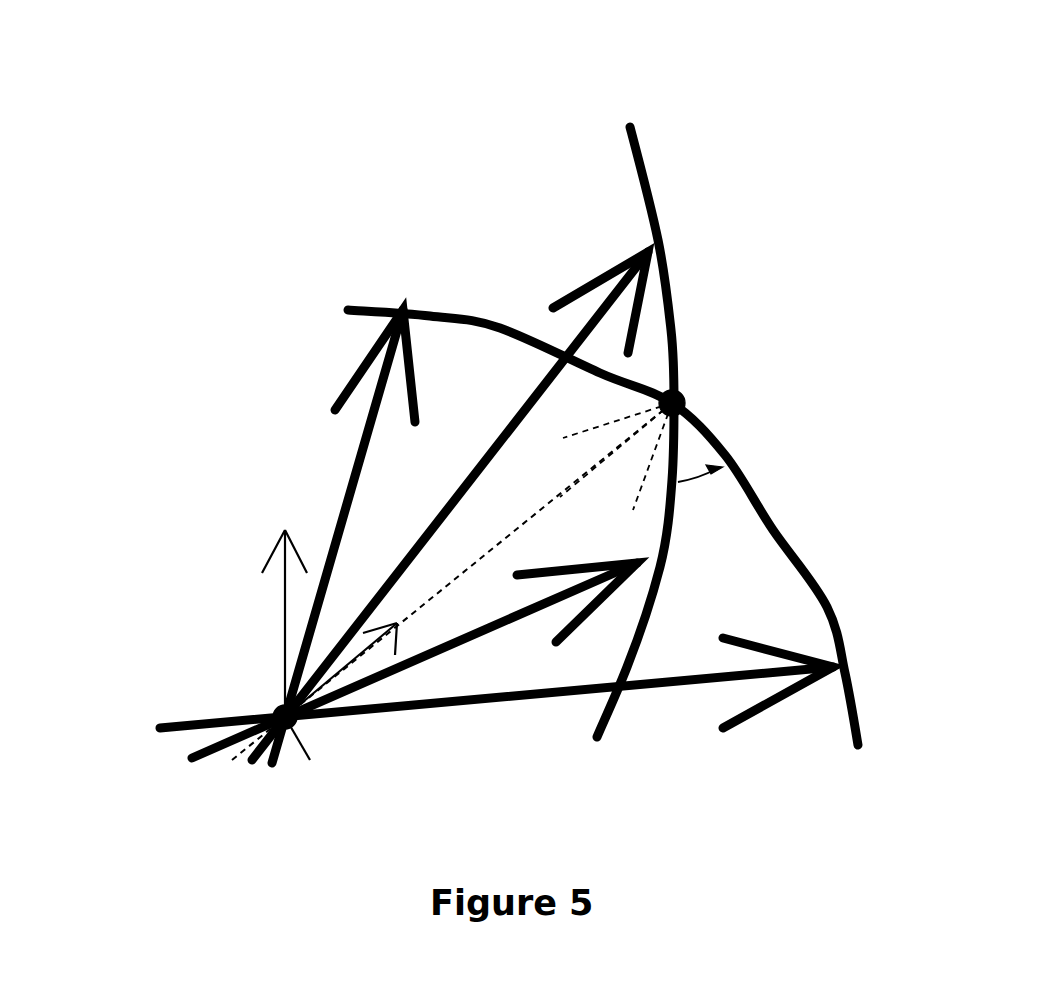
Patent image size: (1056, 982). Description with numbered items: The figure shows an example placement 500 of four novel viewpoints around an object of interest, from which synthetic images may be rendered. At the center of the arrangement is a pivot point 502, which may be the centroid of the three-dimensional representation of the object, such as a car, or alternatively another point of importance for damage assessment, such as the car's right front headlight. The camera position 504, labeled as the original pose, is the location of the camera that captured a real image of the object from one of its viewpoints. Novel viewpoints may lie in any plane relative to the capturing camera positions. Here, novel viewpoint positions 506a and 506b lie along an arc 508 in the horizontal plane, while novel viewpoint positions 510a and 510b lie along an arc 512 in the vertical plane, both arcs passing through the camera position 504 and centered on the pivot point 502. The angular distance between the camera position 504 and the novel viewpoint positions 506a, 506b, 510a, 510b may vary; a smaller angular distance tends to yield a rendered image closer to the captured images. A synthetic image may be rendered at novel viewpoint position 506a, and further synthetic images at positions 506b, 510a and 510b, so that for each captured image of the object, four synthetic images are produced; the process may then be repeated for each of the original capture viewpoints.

The pose space diagram 500 is at (303, 147).
The pivot point 502 is at (280, 712).
The camera position 504 is at (683, 397).
The novel viewpoint position 506a is at (405, 308).
The novel viewpoint position 506b is at (862, 673).
The arc 508 is at (348, 310).
The novel viewpoint position 510a is at (660, 245).
The novel viewpoint position 510b is at (670, 557).
The arc 512 is at (643, 125).